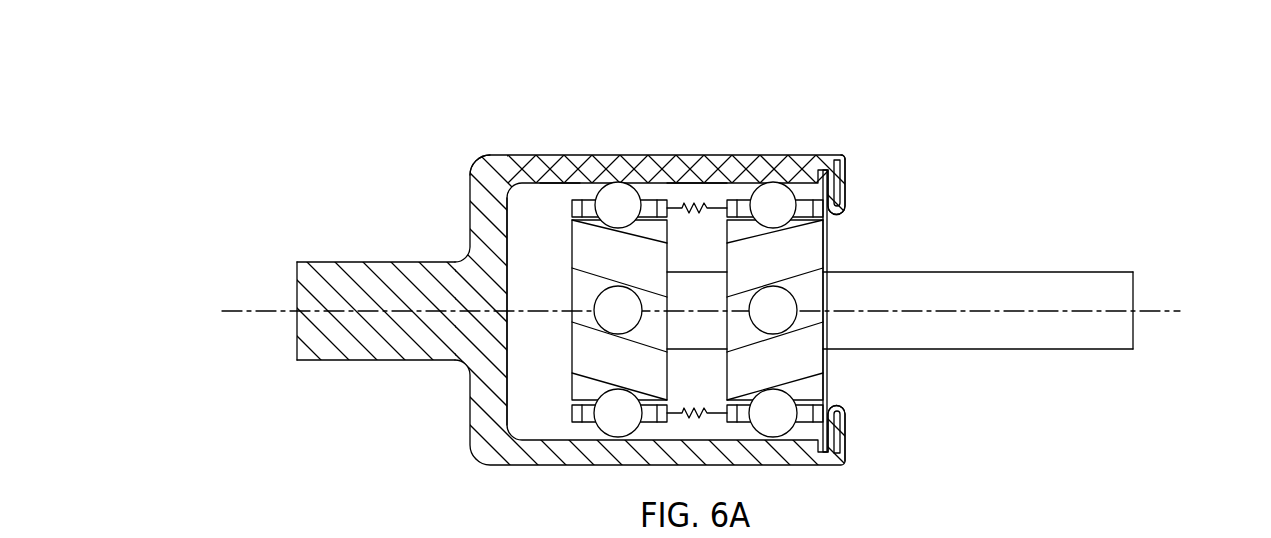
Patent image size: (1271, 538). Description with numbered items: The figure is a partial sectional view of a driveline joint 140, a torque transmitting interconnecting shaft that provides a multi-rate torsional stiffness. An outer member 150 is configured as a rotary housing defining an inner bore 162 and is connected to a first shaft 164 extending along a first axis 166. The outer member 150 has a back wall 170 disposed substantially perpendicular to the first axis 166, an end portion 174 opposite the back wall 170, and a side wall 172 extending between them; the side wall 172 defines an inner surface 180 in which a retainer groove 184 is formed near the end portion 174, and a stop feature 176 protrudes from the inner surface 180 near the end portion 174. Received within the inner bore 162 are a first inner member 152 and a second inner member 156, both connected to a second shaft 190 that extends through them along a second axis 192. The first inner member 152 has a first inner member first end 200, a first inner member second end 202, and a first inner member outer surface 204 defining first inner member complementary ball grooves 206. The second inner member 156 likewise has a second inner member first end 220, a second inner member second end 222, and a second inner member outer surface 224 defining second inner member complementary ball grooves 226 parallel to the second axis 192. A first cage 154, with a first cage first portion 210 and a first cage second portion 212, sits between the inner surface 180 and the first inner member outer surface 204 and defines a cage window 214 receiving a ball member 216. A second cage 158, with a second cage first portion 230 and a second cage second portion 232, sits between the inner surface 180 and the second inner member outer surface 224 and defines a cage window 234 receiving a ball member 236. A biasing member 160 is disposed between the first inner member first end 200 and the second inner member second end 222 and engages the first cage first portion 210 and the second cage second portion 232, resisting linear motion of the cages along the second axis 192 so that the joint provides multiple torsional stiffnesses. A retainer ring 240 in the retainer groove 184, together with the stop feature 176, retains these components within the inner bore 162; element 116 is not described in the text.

The driveline joint 140 is at (960, 153).
The outer member 150 is at (485, 170).
The side wall 172 is at (520, 167).
The inner bore 162 is at (522, 190).
The inner surface 180 is at (558, 180).
The end portion 174 is at (843, 162).
The retainer groove 184 is at (840, 160).
The clip inner slot 116 is at (839, 199).
The stop feature 176 is at (841, 434).
The retainer ring 240 is at (834, 412).
The first shaft 164 is at (336, 274).
The first axis 166 is at (248, 313).
The back wall 170 is at (500, 326).
The second shaft 190 is at (987, 290).
The second axis 192 is at (1135, 313).
The second cage 158 is at (580, 206).
The second cage first portion 230 is at (585, 211).
The second cage second portion 232 is at (658, 211).
The second inner member 156 is at (566, 314).
The second inner member outer surface 224 is at (582, 244).
The second inner member complementary ball grooves 226 is at (580, 296).
The second inner member first end 220 is at (568, 353).
The second inner member second end 222 is at (668, 262).
The ball member 236 is at (618, 197).
The cage window 234 is at (692, 205).
The first inner member first end 200 is at (723, 365).
The biasing member 160 is at (699, 183).
The first cage 154 is at (746, 203).
The cage window 214 is at (752, 200).
The first cage second portion 212 is at (810, 209).
The first cage first portion 210 is at (737, 211).
The first inner member complementary ball grooves 206 is at (810, 284).
The first inner member outer surface 204 is at (810, 357).
The first inner member second end 202 is at (825, 390).
The ball member 216 is at (783, 200).
The first inner member 152 is at (830, 238).